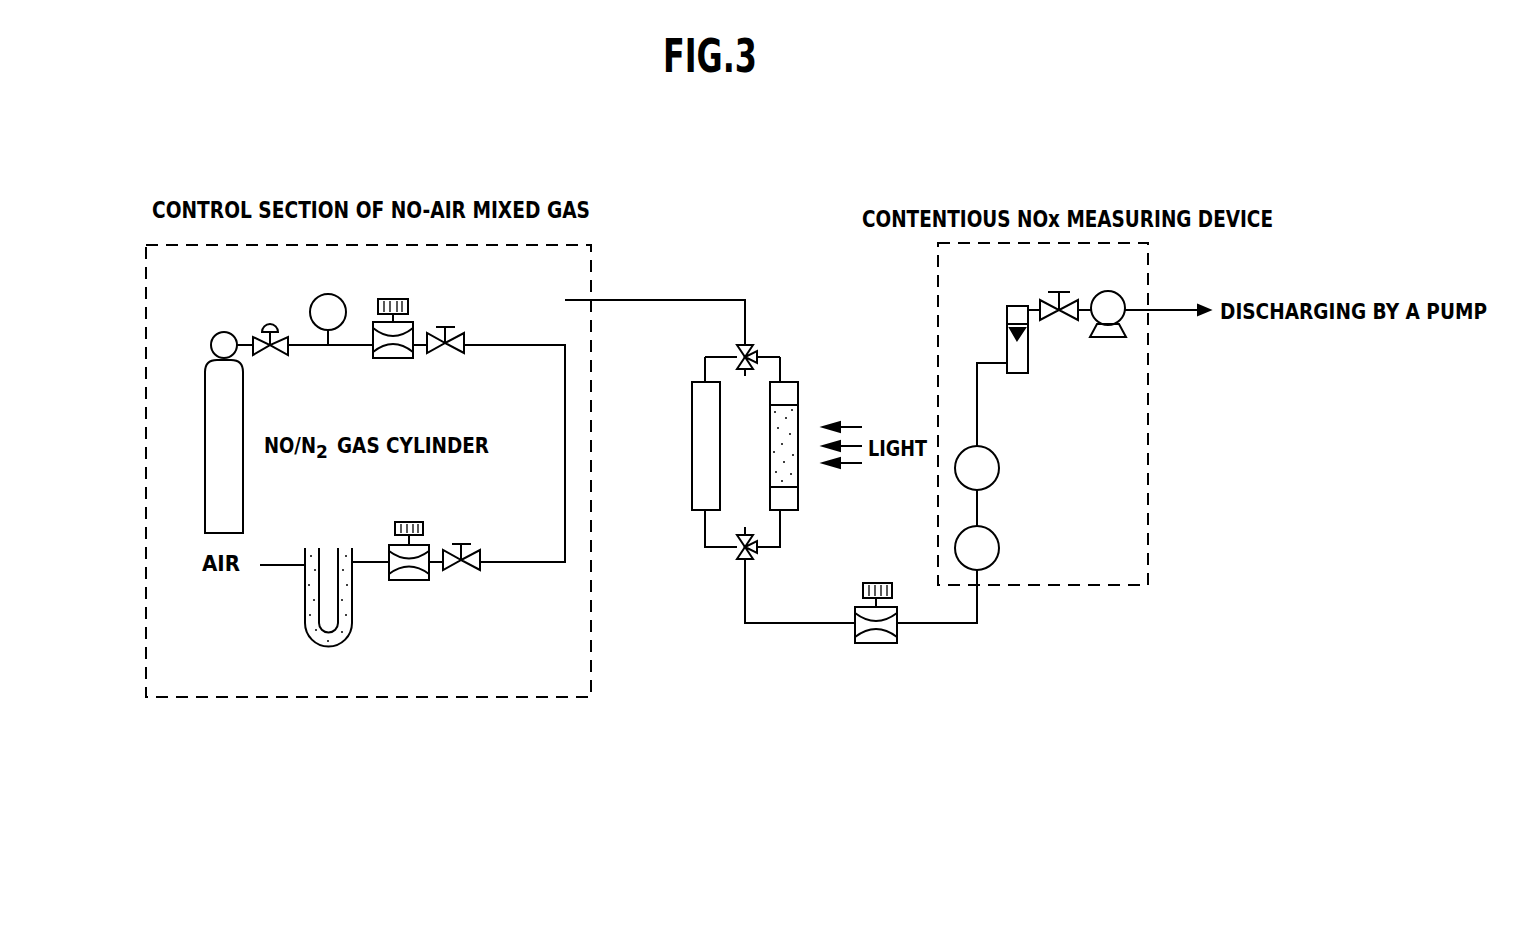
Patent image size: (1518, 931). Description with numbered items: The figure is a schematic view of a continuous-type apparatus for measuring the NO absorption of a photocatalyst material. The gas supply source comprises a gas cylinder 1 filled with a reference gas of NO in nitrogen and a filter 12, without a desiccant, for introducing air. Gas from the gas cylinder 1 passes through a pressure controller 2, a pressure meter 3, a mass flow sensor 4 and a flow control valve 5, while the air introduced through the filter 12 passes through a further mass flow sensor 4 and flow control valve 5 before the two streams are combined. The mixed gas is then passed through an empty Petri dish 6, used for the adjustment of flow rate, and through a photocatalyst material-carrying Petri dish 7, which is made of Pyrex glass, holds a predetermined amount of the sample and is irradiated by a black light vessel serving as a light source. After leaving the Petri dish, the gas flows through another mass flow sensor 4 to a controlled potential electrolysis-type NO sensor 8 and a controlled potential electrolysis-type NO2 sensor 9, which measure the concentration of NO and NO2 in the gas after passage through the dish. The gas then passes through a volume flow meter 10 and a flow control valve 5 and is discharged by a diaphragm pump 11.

The gas cylinder 1 is at (205, 440).
The pressure controller 2 is at (270, 356).
The pressure meter 3 is at (308, 315).
The mass flow sensor 4 is at (396, 360).
The flow control valve 5 is at (445, 355).
The empty Petri dish 6 is at (692, 455).
The photocatalyst material-carrying Petri dish 7 is at (800, 458).
The controlled potential electrolysis-type NO sensor 8 is at (999, 545).
The controlled potential electrolysis-type NO2 sensor 9 is at (999, 465).
The volume flow meter 10 is at (1028, 373).
The diaphragm pump 11 is at (1104, 337).
The filter 12 is at (328, 648).